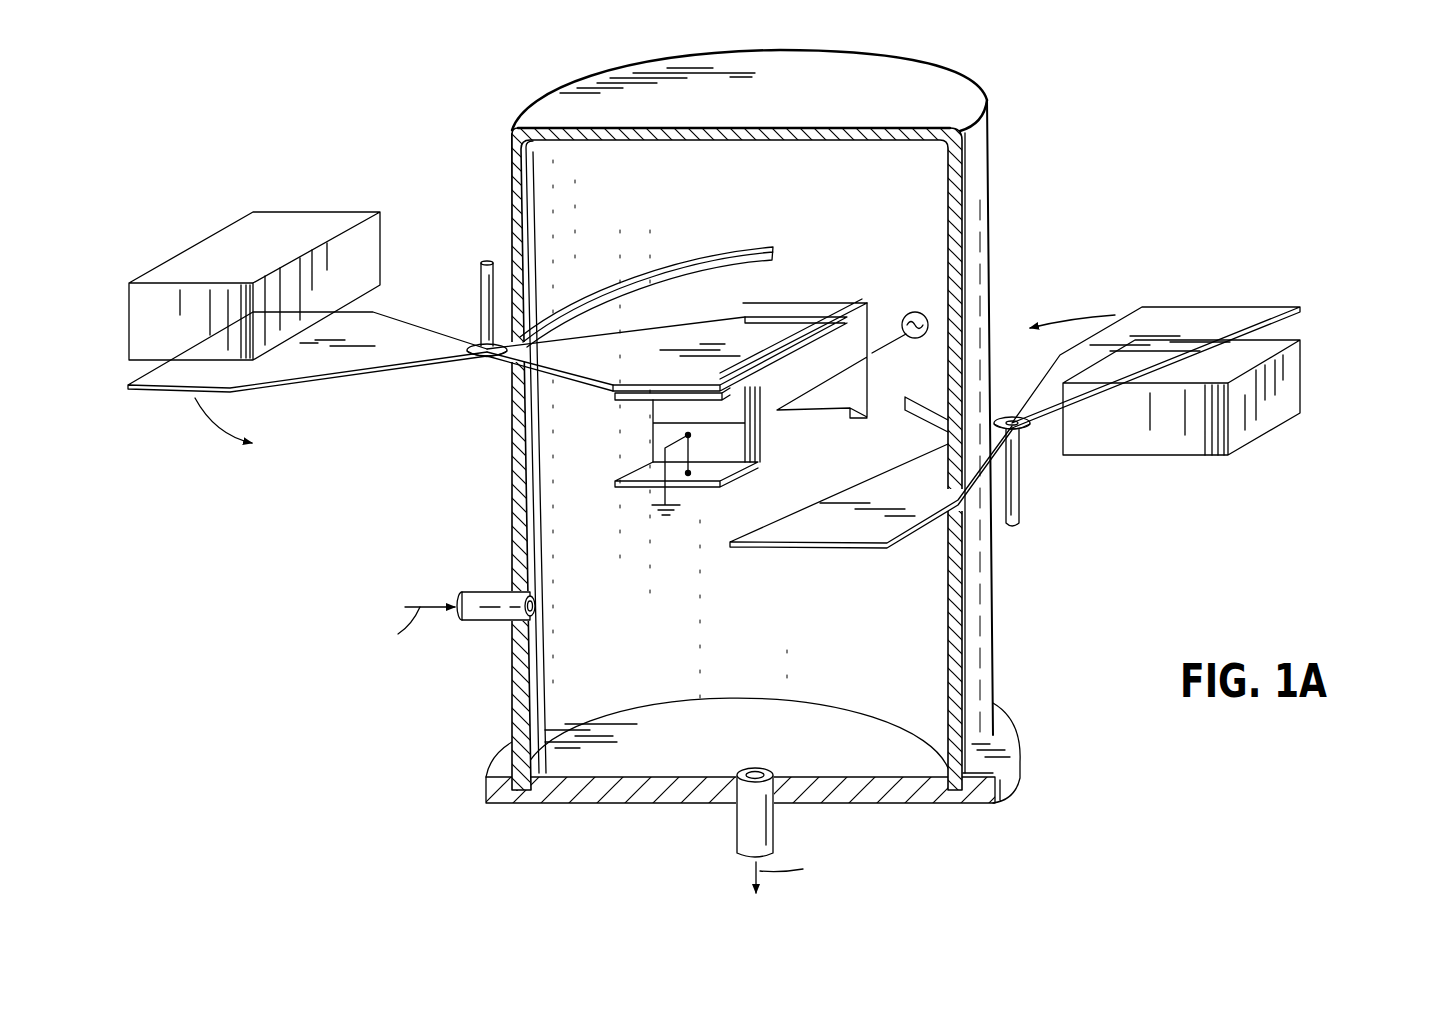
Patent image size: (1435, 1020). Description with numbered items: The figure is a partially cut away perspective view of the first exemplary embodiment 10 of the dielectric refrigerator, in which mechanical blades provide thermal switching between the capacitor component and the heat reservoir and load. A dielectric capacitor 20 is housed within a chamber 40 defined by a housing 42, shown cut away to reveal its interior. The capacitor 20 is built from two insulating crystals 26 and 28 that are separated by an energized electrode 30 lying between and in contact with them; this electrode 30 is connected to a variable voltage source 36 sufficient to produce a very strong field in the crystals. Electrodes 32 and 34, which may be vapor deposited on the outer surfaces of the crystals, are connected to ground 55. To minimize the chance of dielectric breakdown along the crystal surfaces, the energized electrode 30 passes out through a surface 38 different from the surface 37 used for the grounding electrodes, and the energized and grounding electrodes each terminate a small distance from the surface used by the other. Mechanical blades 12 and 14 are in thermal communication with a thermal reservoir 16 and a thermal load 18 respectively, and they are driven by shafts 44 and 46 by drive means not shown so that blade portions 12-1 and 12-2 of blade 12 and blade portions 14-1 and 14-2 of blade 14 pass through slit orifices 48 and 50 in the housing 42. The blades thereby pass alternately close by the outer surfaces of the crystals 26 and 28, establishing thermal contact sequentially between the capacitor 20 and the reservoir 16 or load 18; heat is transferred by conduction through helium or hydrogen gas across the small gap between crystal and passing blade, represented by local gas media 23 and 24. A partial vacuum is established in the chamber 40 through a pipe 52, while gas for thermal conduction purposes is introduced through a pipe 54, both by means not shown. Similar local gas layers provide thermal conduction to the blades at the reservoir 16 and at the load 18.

The first exemplary embodiment 10 is at (516, 96).
The mechanical blade 12 is at (1270, 298).
The blade portion 12-1 is at (1170, 322).
The blade portion 12-2 is at (820, 533).
The mechanical blade 14 is at (333, 386).
The blade portion 14-1 is at (765, 345).
The blade portion 14-2 is at (152, 390).
The thermal reservoir 16 is at (1242, 428).
The thermal load 18 is at (253, 228).
The dielectric capacitor 20 is at (866, 430).
The local gas medium 23 is at (607, 388).
The local gas medium 24 is at (712, 492).
The crystal 26 is at (850, 303).
The crystal 28 is at (796, 423).
The energized electrode 30 is at (860, 364).
The electrode 32 is at (622, 398).
The electrode 34 is at (614, 484).
The variable voltage source 36 is at (916, 311).
The surface 37 is at (746, 440).
The surface 38 is at (876, 312).
The chamber 40 is at (921, 172).
The housing 42 is at (978, 200).
The shaft 44 is at (1022, 507).
The shaft 46 is at (481, 272).
The slit orifice 48 is at (970, 508).
The slit orifice 50 is at (737, 243).
The pipe 52 is at (745, 838).
The pipe 54 is at (490, 597).
The ground 55 is at (652, 506).